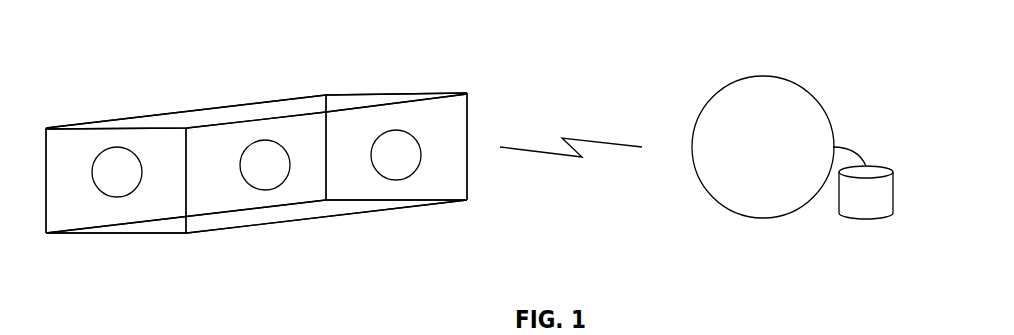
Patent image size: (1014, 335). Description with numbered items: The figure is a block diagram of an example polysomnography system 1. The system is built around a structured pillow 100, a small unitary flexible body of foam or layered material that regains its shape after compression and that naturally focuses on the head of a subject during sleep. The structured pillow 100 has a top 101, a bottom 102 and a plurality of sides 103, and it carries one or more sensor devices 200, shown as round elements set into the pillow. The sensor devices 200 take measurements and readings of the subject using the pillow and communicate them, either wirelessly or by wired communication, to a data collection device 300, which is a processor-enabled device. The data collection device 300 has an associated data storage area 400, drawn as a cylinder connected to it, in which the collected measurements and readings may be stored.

The structured pillow system 1 is at (565, 71).
The structured pillow 100 is at (343, 221).
The top 101 is at (113, 124).
The bottom 102 is at (152, 234).
The sides 103 is at (449, 128).
The sensor devices 200 is at (394, 124).
The data collection device 300 is at (779, 147).
The data storage area 400 is at (867, 219).